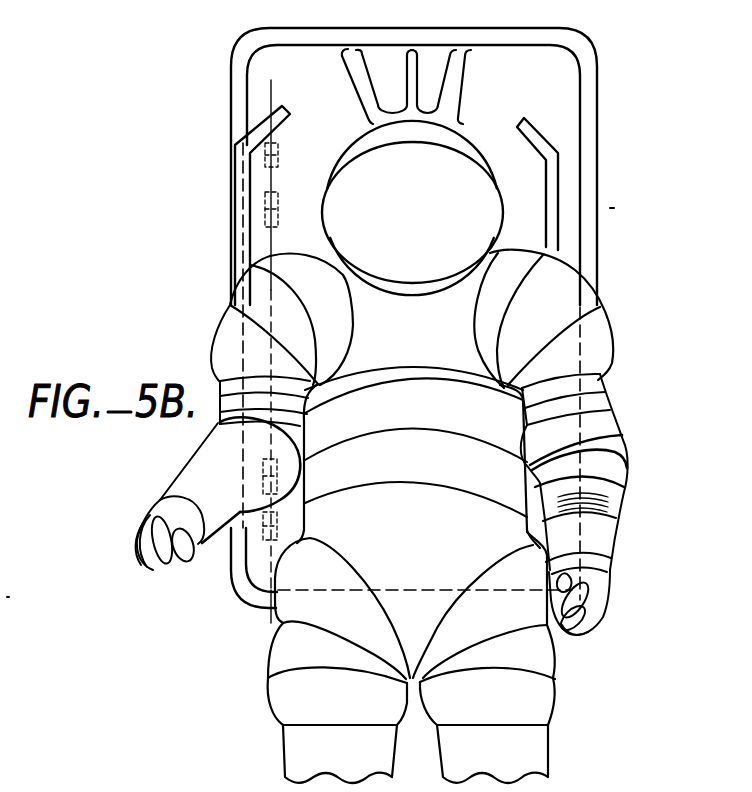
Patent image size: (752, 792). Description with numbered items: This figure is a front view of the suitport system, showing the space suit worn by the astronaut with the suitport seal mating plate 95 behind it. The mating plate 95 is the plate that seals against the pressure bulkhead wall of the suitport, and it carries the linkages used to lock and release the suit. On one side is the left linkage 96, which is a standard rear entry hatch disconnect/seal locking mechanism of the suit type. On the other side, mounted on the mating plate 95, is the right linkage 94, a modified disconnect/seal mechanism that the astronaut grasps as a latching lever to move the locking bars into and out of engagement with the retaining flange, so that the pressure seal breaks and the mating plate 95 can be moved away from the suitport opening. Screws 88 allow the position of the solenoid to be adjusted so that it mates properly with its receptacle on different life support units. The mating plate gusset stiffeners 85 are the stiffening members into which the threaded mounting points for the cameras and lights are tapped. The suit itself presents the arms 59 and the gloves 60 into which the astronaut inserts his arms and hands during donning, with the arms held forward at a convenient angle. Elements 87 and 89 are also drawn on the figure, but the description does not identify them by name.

The arms 59 is at (213, 432).
The gloves 60 is at (177, 515).
The mating plate gusset stiffeners 85 is at (462, 78).
The rod 87 is at (273, 92).
The screws 88 is at (278, 477).
The dashed attachment boxes 89 is at (280, 145).
The right linkage 94 is at (243, 157).
The suitport seal mating plate 95 is at (588, 185).
The left linkage 96 is at (540, 143).